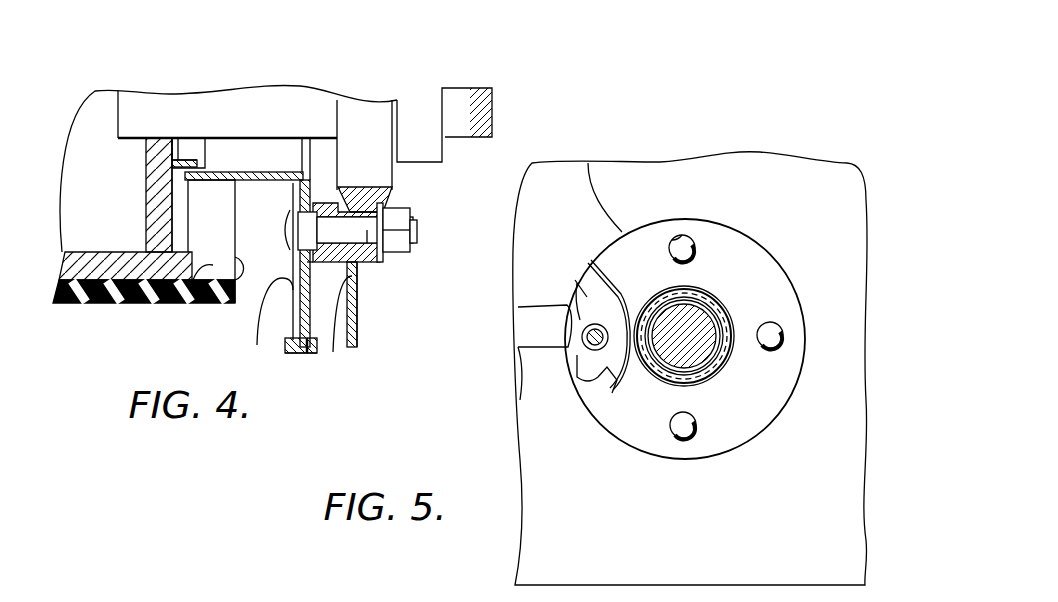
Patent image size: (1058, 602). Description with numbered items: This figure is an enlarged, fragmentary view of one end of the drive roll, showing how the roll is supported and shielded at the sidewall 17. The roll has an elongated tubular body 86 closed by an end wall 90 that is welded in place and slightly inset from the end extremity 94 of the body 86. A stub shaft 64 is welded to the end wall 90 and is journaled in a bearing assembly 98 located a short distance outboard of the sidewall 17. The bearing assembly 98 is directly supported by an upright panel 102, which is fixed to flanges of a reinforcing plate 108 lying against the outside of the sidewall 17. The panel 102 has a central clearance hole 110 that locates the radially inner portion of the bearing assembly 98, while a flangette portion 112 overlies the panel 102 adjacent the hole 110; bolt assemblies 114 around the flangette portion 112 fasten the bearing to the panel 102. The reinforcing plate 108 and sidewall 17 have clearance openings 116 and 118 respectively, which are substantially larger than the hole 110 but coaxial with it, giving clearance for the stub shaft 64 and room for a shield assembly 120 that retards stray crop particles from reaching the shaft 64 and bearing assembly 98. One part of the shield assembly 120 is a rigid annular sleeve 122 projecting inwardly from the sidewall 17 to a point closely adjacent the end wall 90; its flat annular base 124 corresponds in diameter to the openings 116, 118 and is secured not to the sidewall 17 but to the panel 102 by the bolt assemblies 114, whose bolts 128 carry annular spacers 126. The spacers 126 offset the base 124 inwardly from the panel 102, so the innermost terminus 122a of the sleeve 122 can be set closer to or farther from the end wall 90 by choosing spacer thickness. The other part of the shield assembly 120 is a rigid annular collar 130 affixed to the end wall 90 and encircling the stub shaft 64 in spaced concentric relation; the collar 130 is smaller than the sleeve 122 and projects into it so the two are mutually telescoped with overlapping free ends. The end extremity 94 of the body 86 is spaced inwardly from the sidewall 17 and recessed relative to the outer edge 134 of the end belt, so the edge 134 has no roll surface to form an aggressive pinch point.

In FIG. 4, the sidewall 17 is at (290, 350).
In FIG. 5, the sidewall 17 is at (793, 165).
In FIG. 4, the stub shaft 64 is at (245, 95).
In FIG. 5, the stub shaft 64 is at (669, 330).
In FIG. 4, the tubular body 86 is at (80, 268).
In FIG. 4, the end wall 90 is at (167, 240).
In FIG. 4, the end extremity 94 is at (213, 280).
In FIG. 4, the bearing assembly 98 is at (382, 99).
In FIG. 5, the bearing assembly 98 is at (603, 290).
In FIG. 4, the upright panel 102 is at (357, 323).
In FIG. 5, the upright panel 102 is at (558, 182).
In FIG. 4, the reinforcing plate 108 is at (302, 357).
In FIG. 5, the reinforcing plate 108 is at (532, 327).
In FIG. 4, the clearance hole 110 is at (348, 190).
In FIG. 5, the clearance hole 110 is at (600, 293).
In FIG. 4, the flangette portion 112 is at (380, 263).
In FIG. 4, the bolt assembly 114 is at (420, 208).
In FIG. 5, the bolt assembly 114 is at (664, 234).
In FIG. 4, the clearance opening 116 is at (348, 330).
In FIG. 5, the clearance opening 116 is at (585, 310).
In FIG. 4, the clearance opening 118 is at (260, 321).
In FIG. 5, the clearance opening 118 is at (522, 357).
In FIG. 4, the shield assembly 120 is at (205, 190).
In FIG. 5, the shield assembly 120 is at (726, 276).
In FIG. 4, the annular sleeve 122 is at (243, 174).
In FIG. 5, the annular sleeve 122 is at (716, 382).
In FIG. 4, the innermost terminus 122a is at (175, 177).
In FIG. 4, the annular base 124 is at (297, 190).
In FIG. 5, the annular base 124 is at (775, 293).
In FIG. 4, the annular spacer 126 is at (357, 268).
In FIG. 5, the annular spacer 126 is at (618, 382).
In FIG. 4, the bolt 128 is at (418, 232).
In FIG. 5, the bolt 128 is at (690, 236).
In FIG. 4, the annular collar 130 is at (186, 152).
In FIG. 5, the annular collar 130 is at (645, 368).
In FIG. 4, the outer edge 134 is at (240, 258).